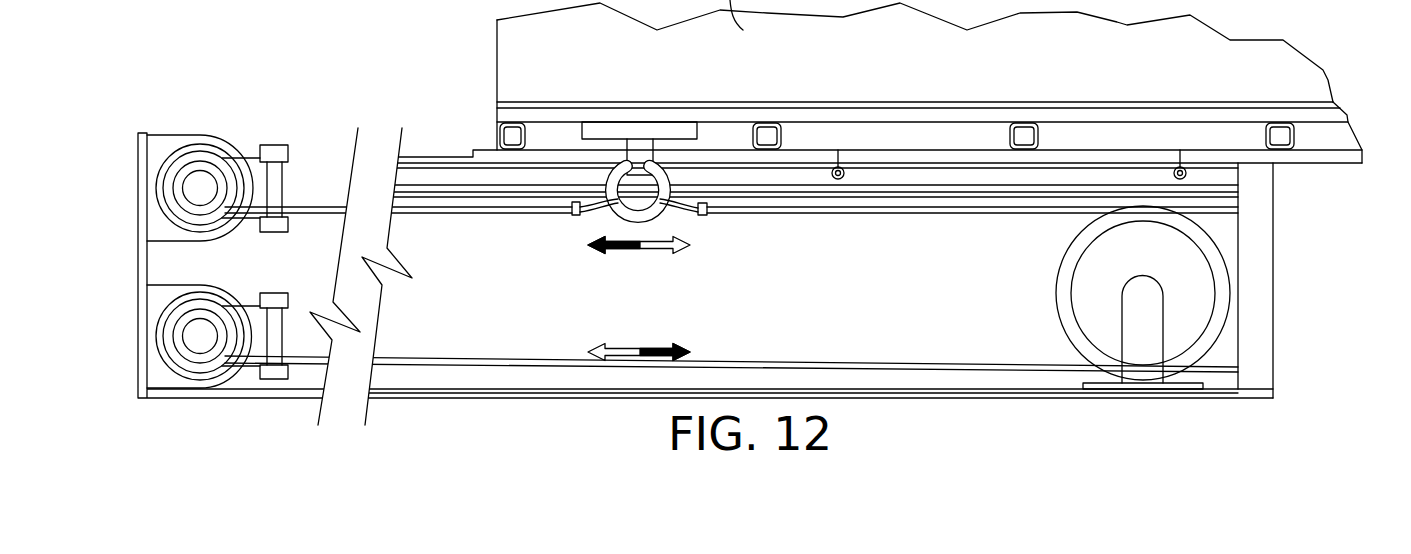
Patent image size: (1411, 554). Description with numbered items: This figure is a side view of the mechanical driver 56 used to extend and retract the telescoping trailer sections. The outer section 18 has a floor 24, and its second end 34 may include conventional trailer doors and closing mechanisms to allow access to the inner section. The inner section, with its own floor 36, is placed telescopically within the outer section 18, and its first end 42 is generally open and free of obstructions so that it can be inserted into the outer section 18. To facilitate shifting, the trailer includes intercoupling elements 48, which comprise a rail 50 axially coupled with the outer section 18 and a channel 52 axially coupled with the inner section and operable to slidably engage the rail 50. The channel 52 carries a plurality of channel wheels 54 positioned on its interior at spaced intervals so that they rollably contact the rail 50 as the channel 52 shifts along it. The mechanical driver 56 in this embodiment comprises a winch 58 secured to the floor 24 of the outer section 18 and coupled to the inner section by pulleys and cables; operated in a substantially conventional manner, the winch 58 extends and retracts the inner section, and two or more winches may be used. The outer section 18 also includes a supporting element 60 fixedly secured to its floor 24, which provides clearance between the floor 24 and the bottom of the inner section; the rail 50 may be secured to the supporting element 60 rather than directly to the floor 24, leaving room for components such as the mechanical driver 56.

The outer section 18 is at (143, 270).
The floor 24 is at (850, 393).
The second end 34 is at (1273, 293).
The floor 36 is at (857, 110).
The first end 42 is at (497, 20).
The intercoupling elements 48 is at (440, 140).
The rail 50 is at (972, 182).
The channel 52 is at (957, 157).
The channel wheels 54 is at (843, 178).
The mechanical driver 56 is at (331, 151).
The winch 58 is at (175, 198).
The supporting element 60 is at (973, 318).